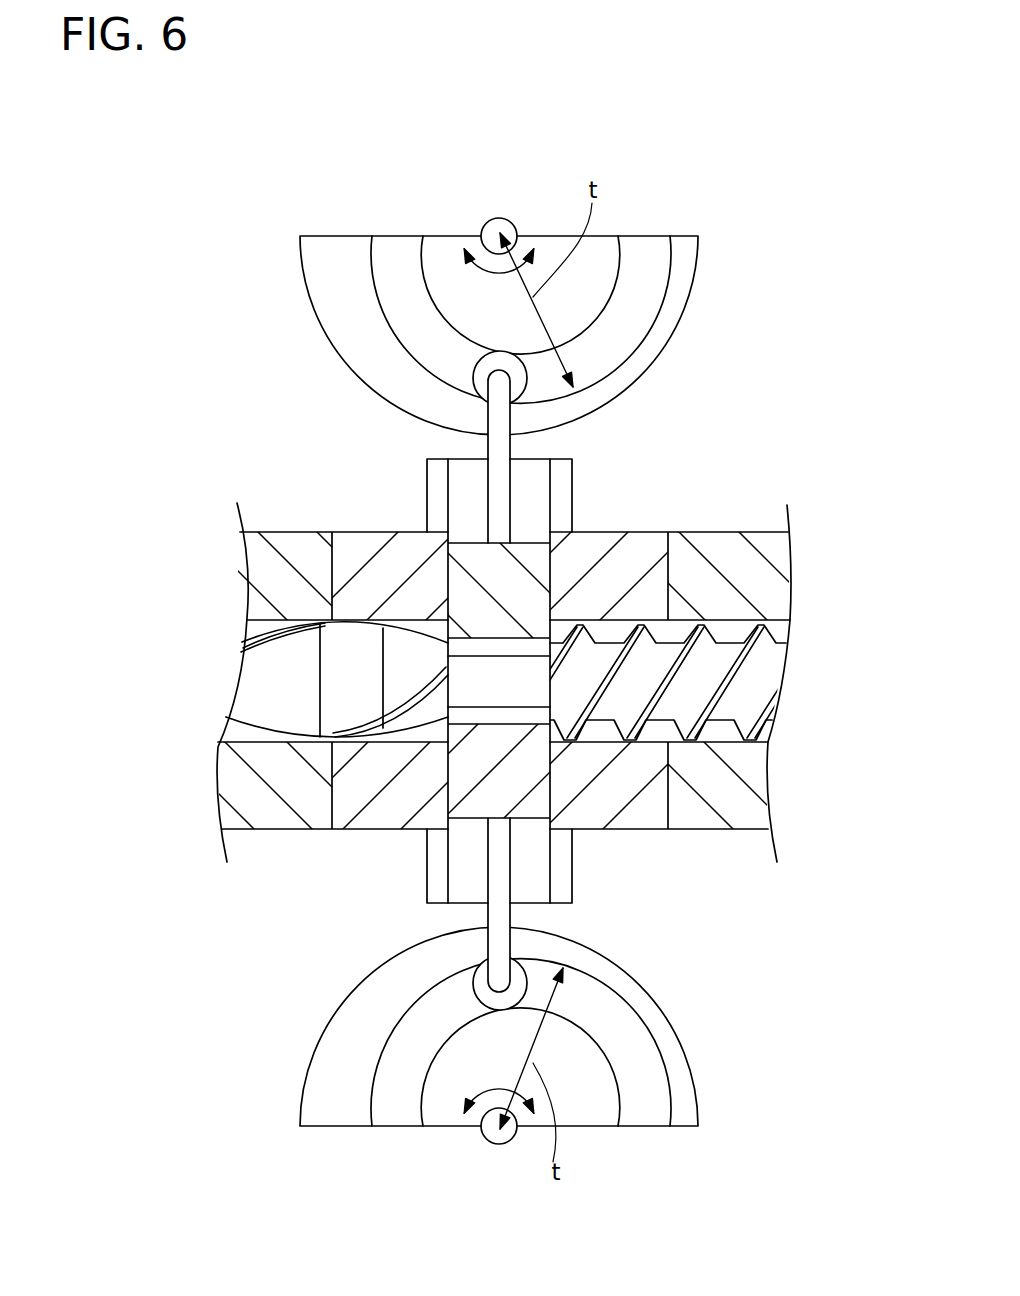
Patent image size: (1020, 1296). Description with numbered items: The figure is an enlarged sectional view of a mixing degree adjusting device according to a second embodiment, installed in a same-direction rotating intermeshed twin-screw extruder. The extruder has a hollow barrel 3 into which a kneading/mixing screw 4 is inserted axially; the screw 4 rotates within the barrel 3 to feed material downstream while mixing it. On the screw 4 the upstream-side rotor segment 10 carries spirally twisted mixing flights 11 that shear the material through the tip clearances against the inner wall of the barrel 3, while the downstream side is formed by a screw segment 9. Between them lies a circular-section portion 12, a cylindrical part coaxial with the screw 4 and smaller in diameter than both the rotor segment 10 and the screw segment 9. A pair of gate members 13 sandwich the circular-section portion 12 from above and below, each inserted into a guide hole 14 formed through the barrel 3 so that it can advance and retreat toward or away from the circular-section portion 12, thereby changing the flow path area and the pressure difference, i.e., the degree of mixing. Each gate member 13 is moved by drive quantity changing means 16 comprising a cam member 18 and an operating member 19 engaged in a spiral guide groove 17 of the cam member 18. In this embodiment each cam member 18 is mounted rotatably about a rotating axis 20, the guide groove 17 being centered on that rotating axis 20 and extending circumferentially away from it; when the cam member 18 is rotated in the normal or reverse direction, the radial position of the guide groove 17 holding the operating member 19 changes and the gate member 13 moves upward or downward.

The barrel 3 is at (768, 549).
The kneading/mixing screw 4 is at (758, 688).
The screw segment 9 is at (765, 663).
The rotor segment 10 is at (256, 672).
The mixing flight 11 is at (262, 636).
The circular-section portion 12 is at (465, 712).
The gate member 13 is at (553, 572).
The guide hole 14 is at (449, 531).
The drive quantity changing means 16 is at (636, 407).
The guide groove 17 is at (663, 267).
The cam member 18 is at (700, 258).
The operating member 19 is at (512, 440).
The rotating axis 20 is at (492, 223).